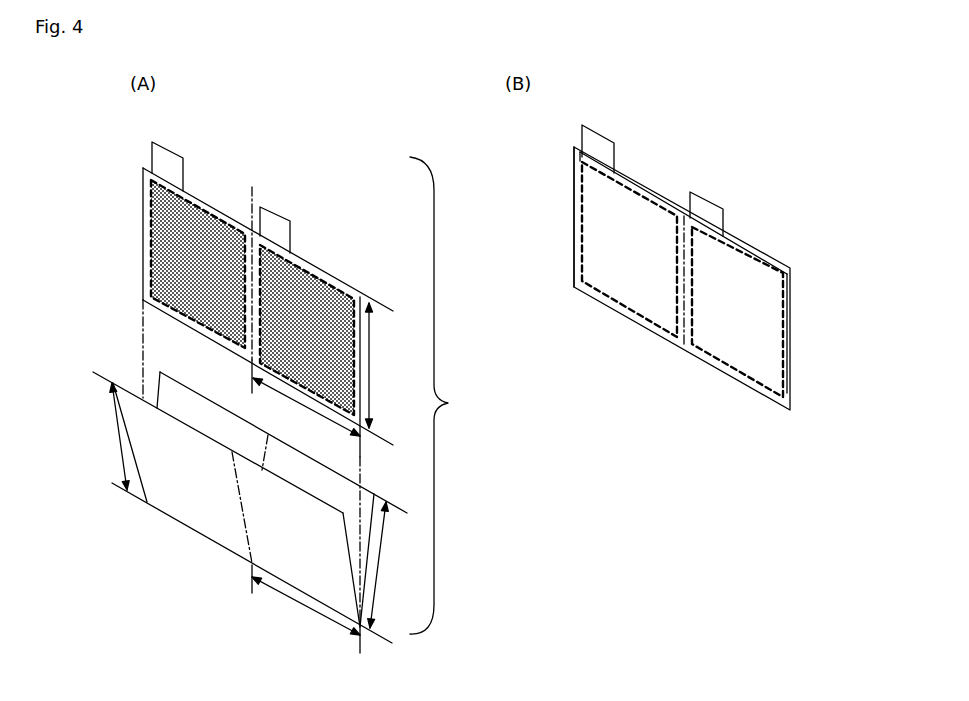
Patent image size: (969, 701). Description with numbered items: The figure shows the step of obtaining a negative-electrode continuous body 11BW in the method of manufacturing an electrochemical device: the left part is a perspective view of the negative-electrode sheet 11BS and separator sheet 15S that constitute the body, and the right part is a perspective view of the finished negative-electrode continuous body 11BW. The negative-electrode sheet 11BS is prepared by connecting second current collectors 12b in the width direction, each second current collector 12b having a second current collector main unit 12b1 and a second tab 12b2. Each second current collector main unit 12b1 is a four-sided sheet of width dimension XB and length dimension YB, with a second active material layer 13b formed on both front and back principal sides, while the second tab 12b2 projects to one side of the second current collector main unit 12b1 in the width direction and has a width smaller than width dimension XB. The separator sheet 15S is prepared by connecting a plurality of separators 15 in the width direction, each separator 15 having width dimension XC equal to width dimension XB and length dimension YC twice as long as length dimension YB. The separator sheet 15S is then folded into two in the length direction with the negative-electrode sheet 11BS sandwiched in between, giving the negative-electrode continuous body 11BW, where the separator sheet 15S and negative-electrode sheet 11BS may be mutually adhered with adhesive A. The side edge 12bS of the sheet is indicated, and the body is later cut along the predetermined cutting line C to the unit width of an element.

The negative-electrode continuous body 11BW is at (527, 418).
The second current collector 12b is at (202, 192).
The second tab 12b2 is at (173, 167).
The second active material layer 13b is at (233, 212).
The second current collector main unit 12b1 is at (307, 262).
The side edge of negative electrode sheet 12bS is at (143, 197).
The negative-electrode sheet 11BS is at (141, 234).
The separator 15 is at (162, 488).
The separator sheet 15S is at (176, 520).
The cutting line C is at (250, 333).
The adhesive A is at (577, 162).
The width dimension of second current collector main unit XB is at (306, 400).
The length dimension of second current collector main unit YB is at (385, 365).
The width dimension of separator XC is at (306, 603).
The length dimension of separator YC is at (106, 441).